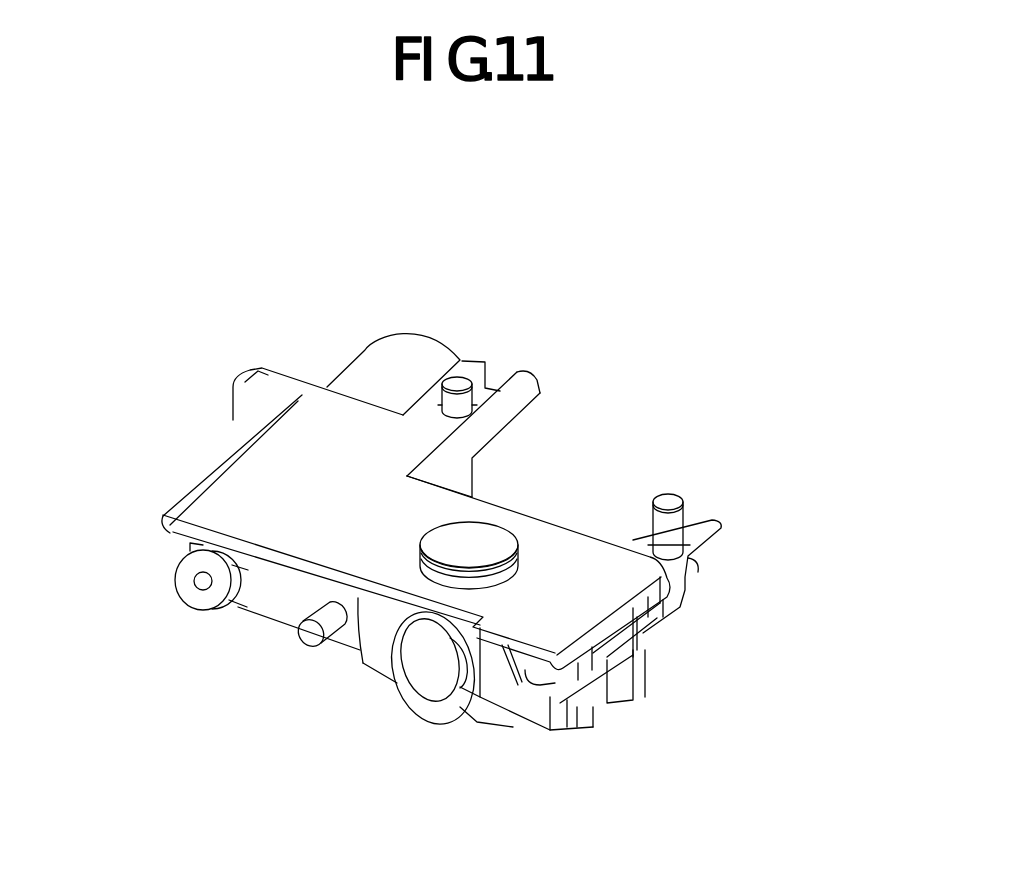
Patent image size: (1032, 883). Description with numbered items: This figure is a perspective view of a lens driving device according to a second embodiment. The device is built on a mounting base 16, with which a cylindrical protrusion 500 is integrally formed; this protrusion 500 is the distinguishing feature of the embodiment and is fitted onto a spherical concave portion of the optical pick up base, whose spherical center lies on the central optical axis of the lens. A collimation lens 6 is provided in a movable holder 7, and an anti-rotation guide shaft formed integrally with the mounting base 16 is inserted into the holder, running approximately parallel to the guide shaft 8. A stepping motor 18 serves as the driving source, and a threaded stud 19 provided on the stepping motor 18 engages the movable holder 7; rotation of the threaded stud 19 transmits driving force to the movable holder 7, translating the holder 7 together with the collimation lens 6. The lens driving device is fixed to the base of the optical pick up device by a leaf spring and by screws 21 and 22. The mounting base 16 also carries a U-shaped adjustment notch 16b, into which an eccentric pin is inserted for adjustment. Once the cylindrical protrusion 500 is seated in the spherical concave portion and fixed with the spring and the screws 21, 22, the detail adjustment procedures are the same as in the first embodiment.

The mounting base 16 is at (303, 438).
The U-shaped adjustment notch 16b is at (500, 362).
The stepping motor 18 is at (393, 352).
The screw 22 is at (462, 383).
The cylindrical protrusion 500 is at (477, 537).
The screw 21 is at (677, 490).
The movable holder 7 is at (385, 660).
The collimation lens 6 is at (452, 637).
The guide shaft 8 is at (313, 637).
The threaded stud 19 is at (200, 580).